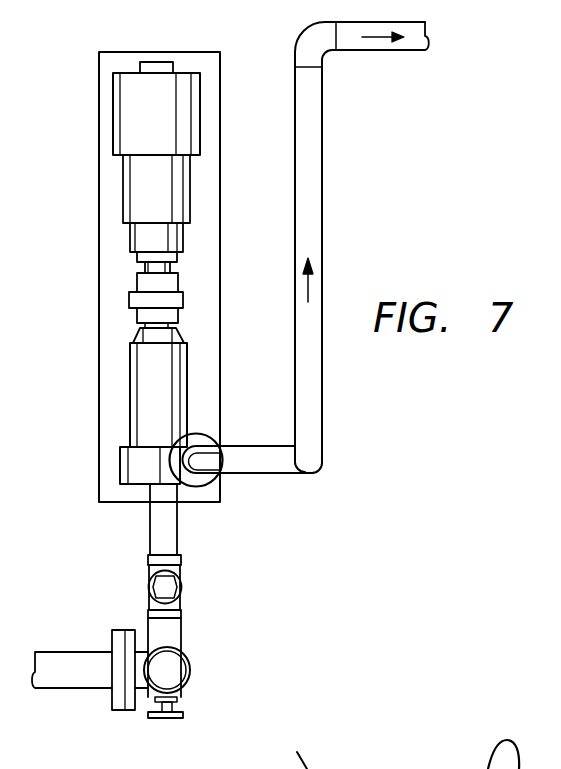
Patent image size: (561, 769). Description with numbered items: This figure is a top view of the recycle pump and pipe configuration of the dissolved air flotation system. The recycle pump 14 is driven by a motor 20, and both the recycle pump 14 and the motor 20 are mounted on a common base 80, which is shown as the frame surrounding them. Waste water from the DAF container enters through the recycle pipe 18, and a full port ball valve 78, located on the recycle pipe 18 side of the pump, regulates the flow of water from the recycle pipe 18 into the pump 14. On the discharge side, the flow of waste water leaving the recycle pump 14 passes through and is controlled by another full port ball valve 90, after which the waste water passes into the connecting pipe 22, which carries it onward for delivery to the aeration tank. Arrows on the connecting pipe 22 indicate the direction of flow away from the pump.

The recycle pump 14 is at (134, 398).
The recycle pipe 18 is at (145, 693).
The motor 20 is at (117, 125).
The connecting pipe 22 is at (323, 232).
The full port ball valve 78 is at (180, 580).
The base 80 is at (111, 253).
The full port ball valve 90 is at (232, 488).